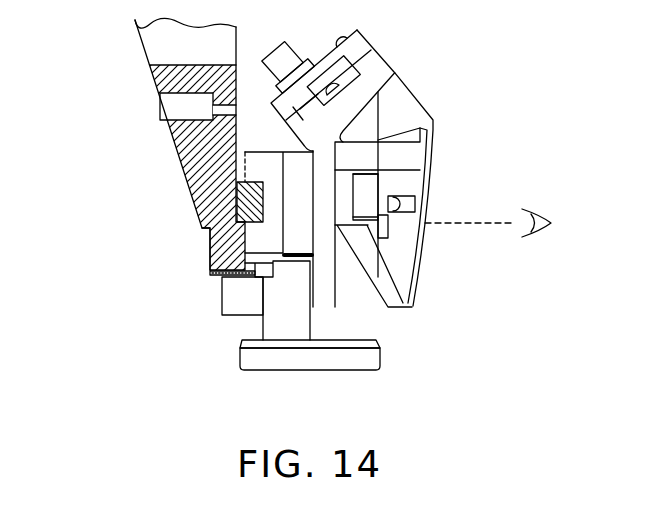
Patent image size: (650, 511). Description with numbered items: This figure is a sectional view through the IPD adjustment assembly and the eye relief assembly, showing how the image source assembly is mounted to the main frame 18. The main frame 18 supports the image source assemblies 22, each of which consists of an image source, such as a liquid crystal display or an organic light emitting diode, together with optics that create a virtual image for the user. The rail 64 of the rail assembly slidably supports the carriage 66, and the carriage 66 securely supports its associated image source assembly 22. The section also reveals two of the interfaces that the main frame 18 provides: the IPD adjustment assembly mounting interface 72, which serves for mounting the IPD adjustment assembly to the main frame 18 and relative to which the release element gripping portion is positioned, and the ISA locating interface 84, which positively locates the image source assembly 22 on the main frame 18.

The main frame 18 is at (152, 77).
The carriage 66 is at (277, 171).
The IPD adjustment assembly mounting interface 72 is at (237, 187).
The rail 64 is at (203, 233).
The ISA locating interface 84 is at (217, 277).
The image source assembly 22 is at (422, 296).